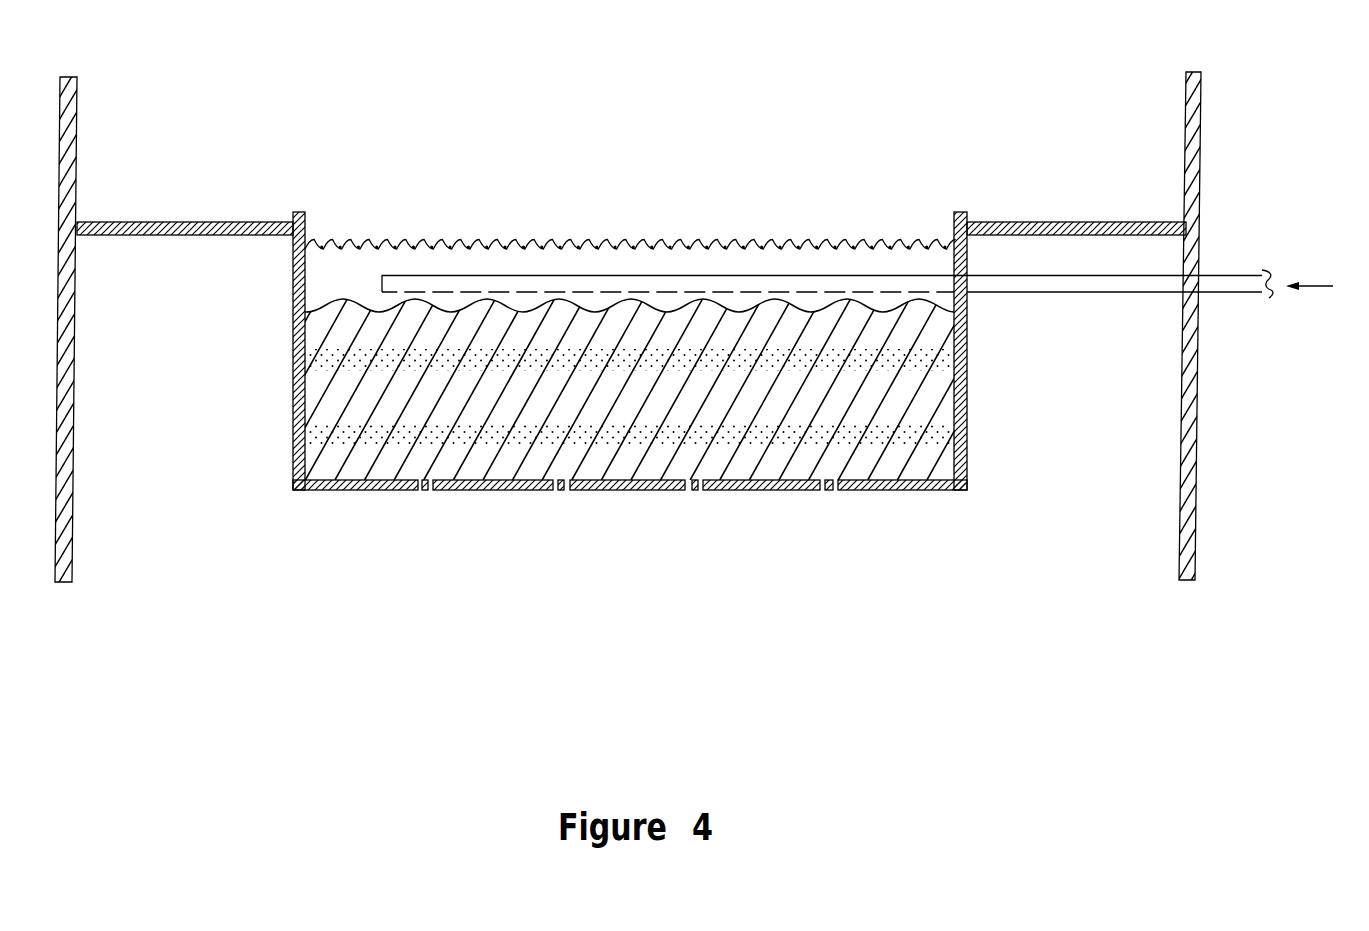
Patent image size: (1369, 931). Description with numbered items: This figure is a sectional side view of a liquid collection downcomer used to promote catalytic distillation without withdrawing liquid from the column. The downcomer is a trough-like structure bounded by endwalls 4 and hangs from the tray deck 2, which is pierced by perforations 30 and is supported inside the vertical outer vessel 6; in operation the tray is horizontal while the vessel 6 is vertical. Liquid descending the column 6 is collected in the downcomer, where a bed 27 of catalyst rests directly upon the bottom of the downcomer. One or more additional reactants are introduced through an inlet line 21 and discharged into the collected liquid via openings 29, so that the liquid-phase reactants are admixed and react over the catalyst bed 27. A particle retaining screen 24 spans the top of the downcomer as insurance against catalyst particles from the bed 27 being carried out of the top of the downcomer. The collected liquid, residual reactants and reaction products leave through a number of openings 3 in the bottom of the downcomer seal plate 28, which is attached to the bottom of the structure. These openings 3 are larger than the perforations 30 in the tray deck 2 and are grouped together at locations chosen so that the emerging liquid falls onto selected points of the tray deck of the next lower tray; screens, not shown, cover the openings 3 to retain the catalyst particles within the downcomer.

The tray deck 2 is at (1040, 222).
The openings 3 is at (833, 490).
The endwalls 4 is at (963, 418).
The outer vessel 6 is at (1200, 193).
The inlet line 21 is at (1230, 275).
The particle retaining screen 24 is at (543, 240).
The catalyst bed 27 is at (318, 403).
The seal plate 28 is at (867, 490).
The openings 29 is at (475, 291).
The perforations 30 is at (1135, 223).